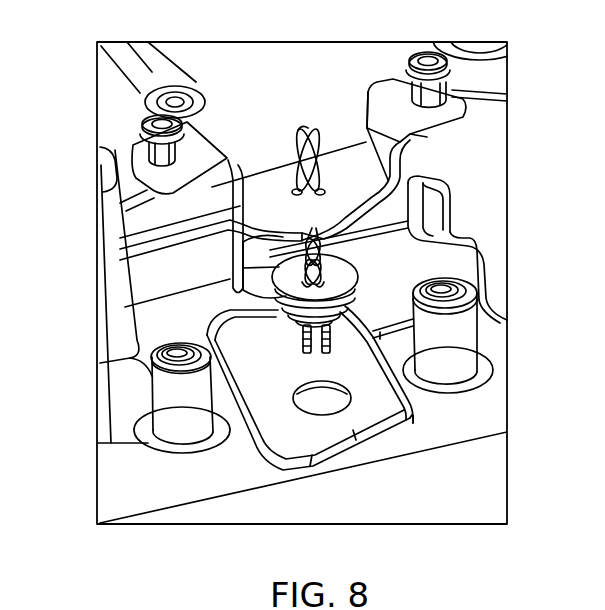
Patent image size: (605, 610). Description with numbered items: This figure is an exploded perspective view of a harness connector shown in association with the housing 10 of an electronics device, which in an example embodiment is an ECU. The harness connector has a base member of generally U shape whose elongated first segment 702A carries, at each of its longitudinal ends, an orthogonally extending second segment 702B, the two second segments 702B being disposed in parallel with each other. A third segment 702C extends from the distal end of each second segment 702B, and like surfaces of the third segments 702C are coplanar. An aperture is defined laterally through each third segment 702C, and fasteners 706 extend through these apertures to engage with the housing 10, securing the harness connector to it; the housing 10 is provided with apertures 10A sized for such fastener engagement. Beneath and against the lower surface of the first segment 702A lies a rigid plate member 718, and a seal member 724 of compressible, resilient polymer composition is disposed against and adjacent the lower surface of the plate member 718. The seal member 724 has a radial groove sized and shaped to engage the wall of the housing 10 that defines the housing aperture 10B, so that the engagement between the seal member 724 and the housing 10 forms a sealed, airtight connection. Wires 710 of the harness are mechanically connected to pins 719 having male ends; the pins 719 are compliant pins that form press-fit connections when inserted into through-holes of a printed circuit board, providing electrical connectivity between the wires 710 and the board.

The housing 10 is at (487, 490).
The apertures of housing 10A is at (490, 293).
The housing aperture 10B is at (338, 401).
The fasteners 706 is at (405, 62).
The first segment 702A is at (243, 178).
The second segments 702B is at (478, 165).
The third segments 702C is at (473, 97).
The wires 710 is at (312, 130).
The plate member 718 is at (437, 212).
The seal member 724 is at (290, 308).
The pins 719 is at (306, 353).